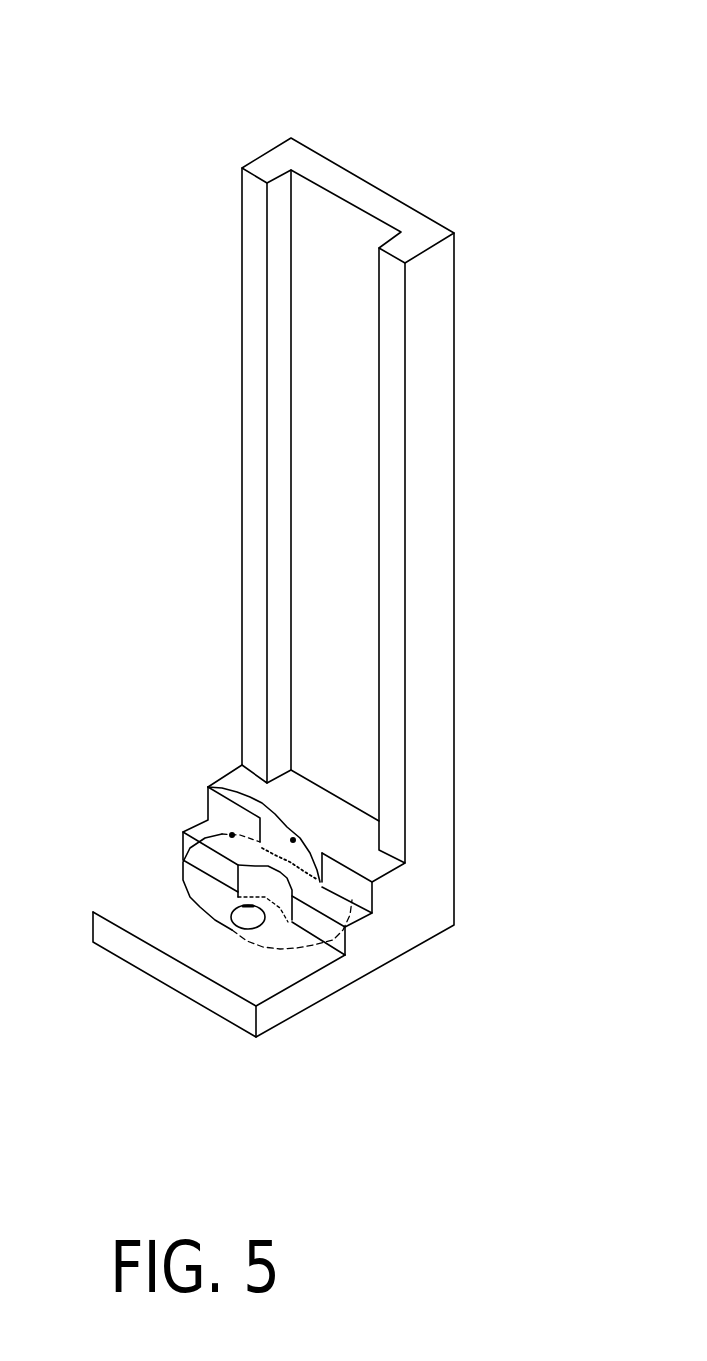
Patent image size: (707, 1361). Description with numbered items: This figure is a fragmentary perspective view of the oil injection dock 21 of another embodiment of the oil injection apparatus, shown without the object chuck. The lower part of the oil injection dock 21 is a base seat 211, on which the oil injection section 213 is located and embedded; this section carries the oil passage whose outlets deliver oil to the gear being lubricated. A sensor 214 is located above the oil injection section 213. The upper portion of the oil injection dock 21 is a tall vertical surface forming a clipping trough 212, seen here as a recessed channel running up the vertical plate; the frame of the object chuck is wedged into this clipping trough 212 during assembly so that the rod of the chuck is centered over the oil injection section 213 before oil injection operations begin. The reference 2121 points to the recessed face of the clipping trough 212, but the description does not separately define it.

The oil injection dock 21 is at (225, 130).
The base seat 211 is at (378, 941).
The clipping trough 212 is at (440, 399).
The slot 2121 is at (333, 526).
The oil injection section 213 is at (243, 935).
The sensor 214 is at (212, 786).